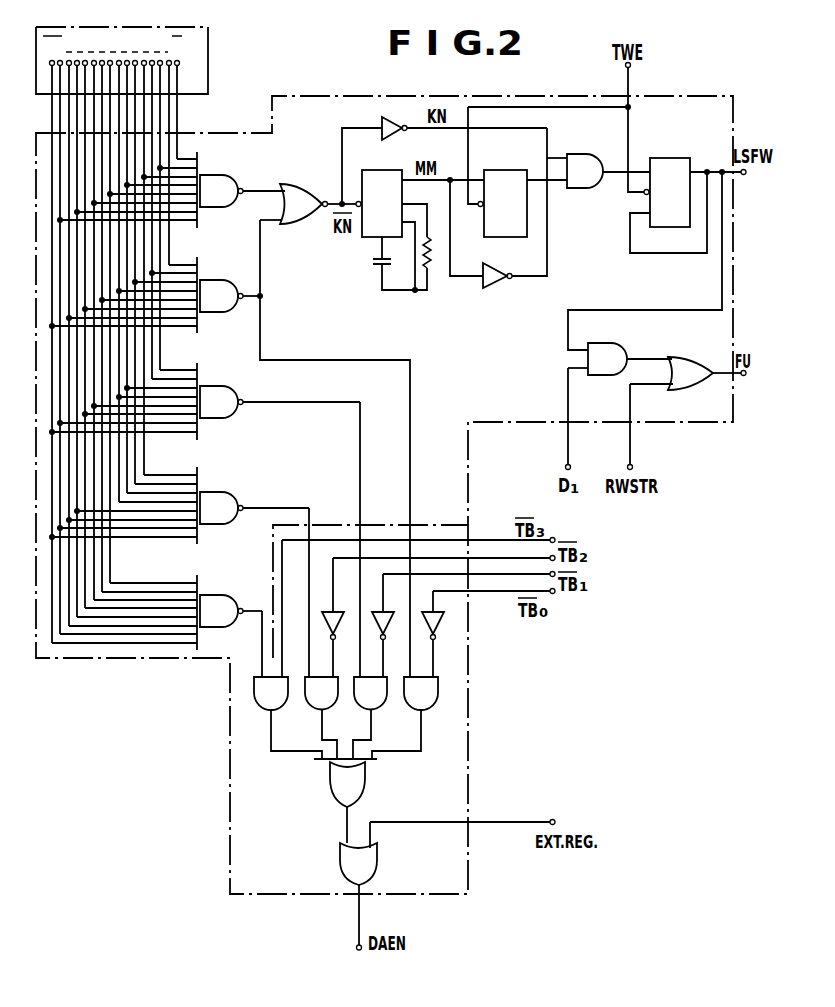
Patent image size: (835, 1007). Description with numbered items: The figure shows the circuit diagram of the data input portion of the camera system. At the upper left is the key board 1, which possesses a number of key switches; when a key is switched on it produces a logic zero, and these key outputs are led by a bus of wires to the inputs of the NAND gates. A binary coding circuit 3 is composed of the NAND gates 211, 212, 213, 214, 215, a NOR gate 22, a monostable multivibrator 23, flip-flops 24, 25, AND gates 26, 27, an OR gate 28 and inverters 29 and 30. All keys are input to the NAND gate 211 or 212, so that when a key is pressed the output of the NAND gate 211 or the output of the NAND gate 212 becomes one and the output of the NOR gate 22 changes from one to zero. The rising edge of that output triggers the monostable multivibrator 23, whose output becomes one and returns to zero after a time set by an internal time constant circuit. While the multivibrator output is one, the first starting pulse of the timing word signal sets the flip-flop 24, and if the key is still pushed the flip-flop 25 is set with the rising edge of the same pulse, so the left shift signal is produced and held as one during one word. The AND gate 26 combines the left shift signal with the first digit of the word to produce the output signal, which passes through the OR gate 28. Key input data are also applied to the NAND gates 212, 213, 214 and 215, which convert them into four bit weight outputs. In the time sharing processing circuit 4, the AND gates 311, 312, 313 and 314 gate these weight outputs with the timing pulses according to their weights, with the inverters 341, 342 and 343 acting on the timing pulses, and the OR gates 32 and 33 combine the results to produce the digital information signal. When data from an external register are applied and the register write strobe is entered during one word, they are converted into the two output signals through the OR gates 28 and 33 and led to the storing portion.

The key board 1 is at (210, 42).
The binary coding circuit 3 is at (305, 96).
The time sharing processing circuit 4 is at (470, 793).
The NAND gate 211 is at (205, 164).
The NAND gate 212 is at (205, 269).
The NAND gate 213 is at (205, 375).
The NAND gate 214 is at (205, 482).
The NAND gate 215 is at (205, 585).
The NOR gate 22 is at (318, 193).
The monostable multivibrator 23 is at (367, 170).
The flip-flop 24 is at (513, 157).
The flip-flop 25 is at (668, 158).
The AND gate 26 is at (645, 318).
The AND gate 27 is at (577, 155).
The OR gate 28 is at (688, 398).
The inverter 29 is at (444, 153).
The inverter 30 is at (498, 221).
The AND gate 311 is at (257, 708).
The AND gate 312 is at (311, 706).
The AND gate 313 is at (381, 706).
The AND gate 314 is at (432, 706).
The OR gate 32 is at (357, 783).
The OR gate 33 is at (373, 860).
The inverter 341 is at (327, 612).
The inverter 342 is at (376, 612).
The inverter 343 is at (443, 620).